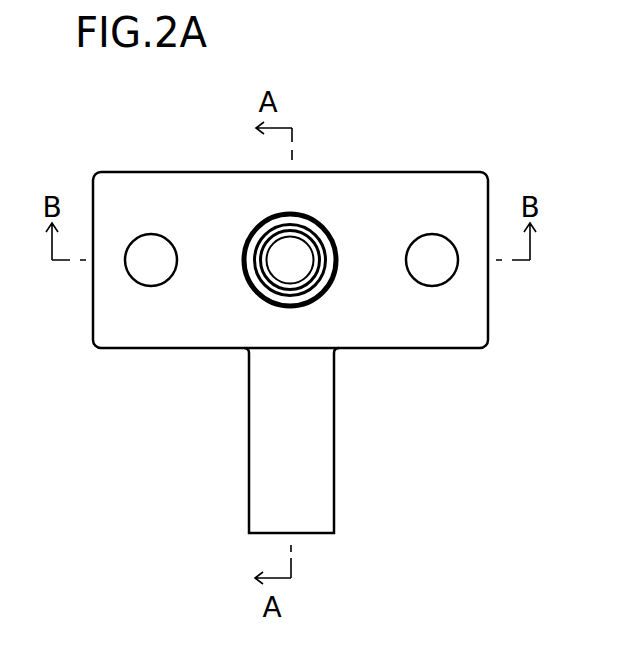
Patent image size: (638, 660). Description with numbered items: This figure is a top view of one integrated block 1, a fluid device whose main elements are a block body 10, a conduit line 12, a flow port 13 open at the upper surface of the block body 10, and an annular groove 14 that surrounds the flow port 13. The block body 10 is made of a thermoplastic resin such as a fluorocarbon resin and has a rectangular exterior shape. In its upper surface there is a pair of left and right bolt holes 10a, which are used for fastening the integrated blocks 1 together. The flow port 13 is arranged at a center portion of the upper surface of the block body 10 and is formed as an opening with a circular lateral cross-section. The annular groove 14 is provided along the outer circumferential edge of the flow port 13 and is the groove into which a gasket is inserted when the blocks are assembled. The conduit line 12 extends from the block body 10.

The integrated block 1 is at (412, 140).
The block body 10 is at (422, 350).
The bolt holes 10a is at (138, 270).
The conduit line 12 is at (334, 481).
The flow port 13 is at (306, 250).
The annular groove 14 is at (260, 230).